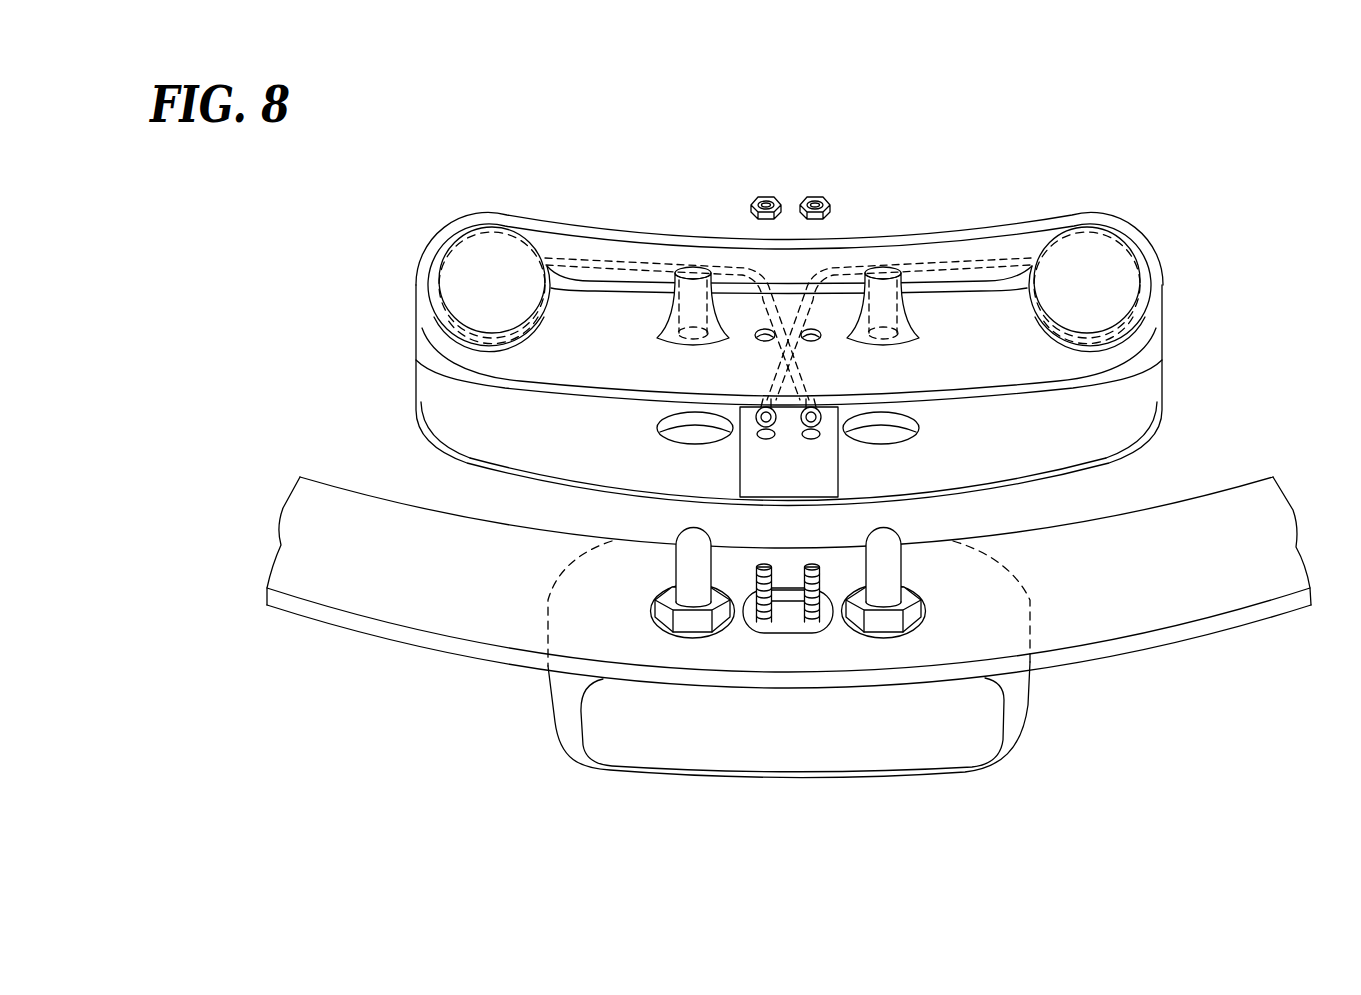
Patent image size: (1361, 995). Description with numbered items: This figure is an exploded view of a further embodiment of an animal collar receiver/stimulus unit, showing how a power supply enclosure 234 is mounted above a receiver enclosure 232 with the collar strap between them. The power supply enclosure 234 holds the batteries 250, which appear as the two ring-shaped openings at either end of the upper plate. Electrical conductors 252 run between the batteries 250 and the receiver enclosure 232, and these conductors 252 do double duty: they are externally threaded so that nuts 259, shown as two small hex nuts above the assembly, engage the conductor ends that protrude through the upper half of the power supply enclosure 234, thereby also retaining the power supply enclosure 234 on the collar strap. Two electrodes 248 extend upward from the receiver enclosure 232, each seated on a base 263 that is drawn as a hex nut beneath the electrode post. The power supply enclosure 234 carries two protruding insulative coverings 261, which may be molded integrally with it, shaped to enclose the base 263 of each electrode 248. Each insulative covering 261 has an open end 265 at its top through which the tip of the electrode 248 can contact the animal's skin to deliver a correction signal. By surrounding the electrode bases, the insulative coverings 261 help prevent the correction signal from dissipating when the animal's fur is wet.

The receiver enclosure 232 is at (965, 737).
The power supply enclosure 234 is at (975, 227).
The electrodes 248 is at (685, 549).
The batteries 250 is at (452, 272).
The electrical conductors 252 is at (813, 625).
The nuts 259 is at (810, 193).
The insulative coverings 261 is at (665, 330).
The base 263 is at (687, 587).
The open ends 265 is at (689, 267).